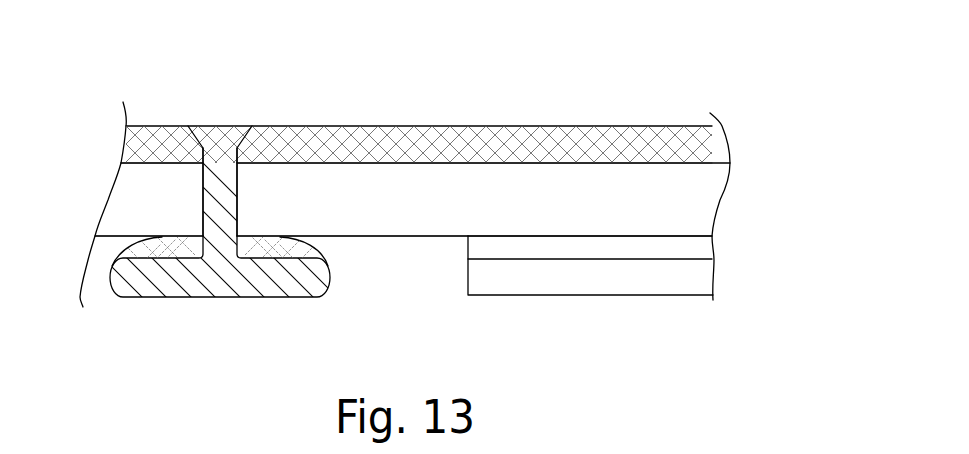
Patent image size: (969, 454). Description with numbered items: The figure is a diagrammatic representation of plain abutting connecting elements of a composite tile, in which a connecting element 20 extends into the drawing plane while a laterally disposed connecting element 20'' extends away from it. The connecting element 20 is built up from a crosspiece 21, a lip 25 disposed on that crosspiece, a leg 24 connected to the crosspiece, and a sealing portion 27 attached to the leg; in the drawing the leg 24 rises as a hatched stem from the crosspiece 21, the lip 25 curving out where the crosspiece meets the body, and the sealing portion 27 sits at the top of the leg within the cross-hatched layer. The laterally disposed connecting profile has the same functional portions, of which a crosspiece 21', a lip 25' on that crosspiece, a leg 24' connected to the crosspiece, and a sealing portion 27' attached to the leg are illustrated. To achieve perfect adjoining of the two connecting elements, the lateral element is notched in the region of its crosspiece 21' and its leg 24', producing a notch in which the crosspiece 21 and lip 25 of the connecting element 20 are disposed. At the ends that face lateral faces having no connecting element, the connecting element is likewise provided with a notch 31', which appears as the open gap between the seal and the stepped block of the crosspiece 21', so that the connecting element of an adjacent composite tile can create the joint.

The connecting element 20 is at (405, 210).
The laterally disposed connecting element 20'' is at (149, 144).
The leg 24 is at (215, 144).
The sealing portion 27 is at (230, 110).
The sealing portion 27' is at (419, 108).
The leg 24' is at (474, 144).
The crosspiece 21 is at (170, 258).
The lip 25 is at (220, 296).
The notch 31' is at (404, 302).
The crosspiece 21' is at (590, 302).
The lip 25' is at (590, 302).